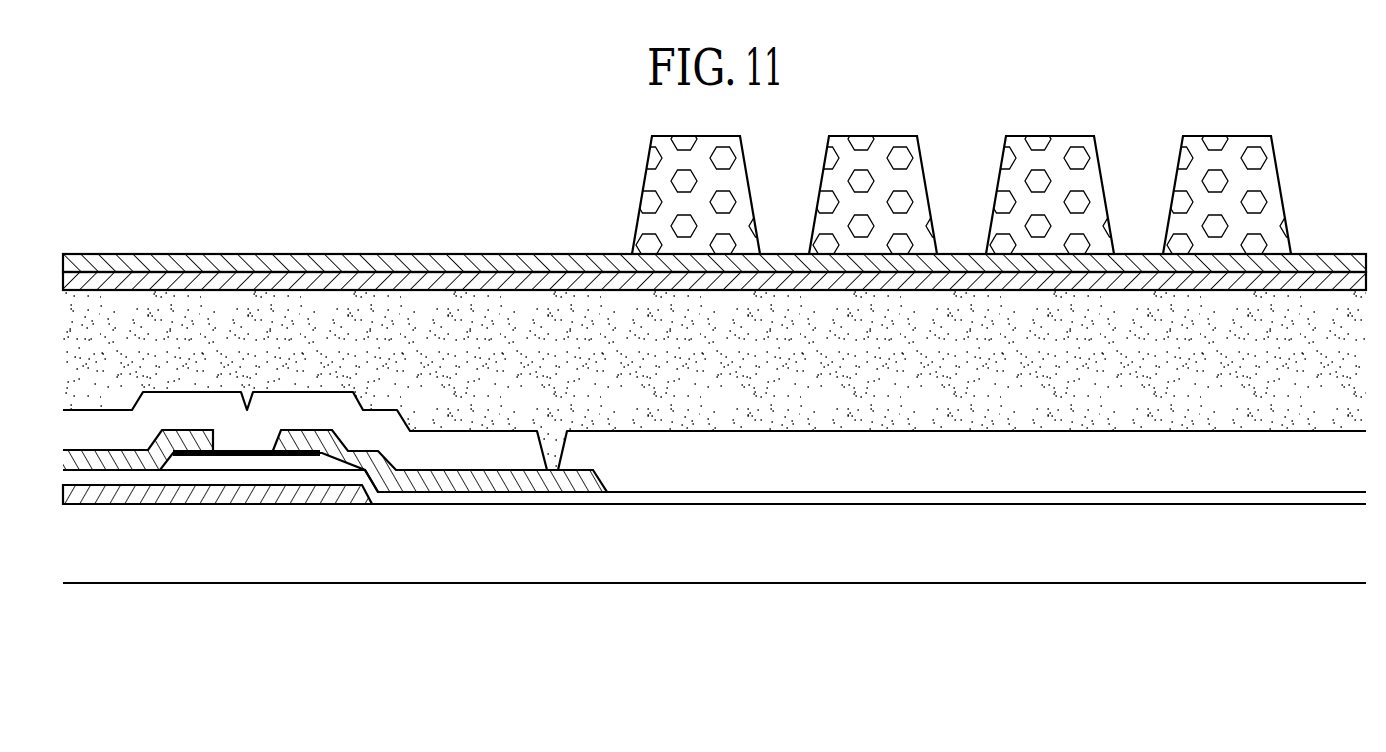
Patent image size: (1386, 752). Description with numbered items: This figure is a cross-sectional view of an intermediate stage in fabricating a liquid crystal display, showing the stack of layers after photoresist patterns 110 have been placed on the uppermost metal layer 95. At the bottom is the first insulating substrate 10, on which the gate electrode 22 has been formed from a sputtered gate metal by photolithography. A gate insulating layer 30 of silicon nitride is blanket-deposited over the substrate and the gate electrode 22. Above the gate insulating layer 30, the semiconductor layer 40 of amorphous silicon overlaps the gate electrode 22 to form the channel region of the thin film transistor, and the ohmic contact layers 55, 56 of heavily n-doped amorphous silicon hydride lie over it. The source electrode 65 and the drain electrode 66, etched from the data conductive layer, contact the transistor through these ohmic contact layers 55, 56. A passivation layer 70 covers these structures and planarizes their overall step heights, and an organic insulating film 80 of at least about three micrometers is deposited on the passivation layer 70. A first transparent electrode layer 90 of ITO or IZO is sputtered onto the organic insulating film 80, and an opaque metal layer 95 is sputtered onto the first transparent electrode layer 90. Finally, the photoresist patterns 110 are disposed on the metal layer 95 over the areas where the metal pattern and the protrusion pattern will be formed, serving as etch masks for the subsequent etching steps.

The first insulating substrate 10 is at (437, 555).
The gate electrode 22 is at (237, 497).
The gate insulating layer 30 is at (678, 498).
The semiconductor layer 40 is at (175, 463).
The ohmic contact layer 55 is at (203, 463).
The ohmic contact layer 56 is at (280, 460).
The source electrode 65 is at (97, 460).
The drain electrode 66 is at (318, 460).
The passivation layer 70 is at (792, 457).
The organic insulating film 80 is at (887, 380).
The first transparent electrode layer 90 is at (988, 285).
The metal layer 95 is at (1035, 273).
The photoresist patterns 110 is at (1240, 230).